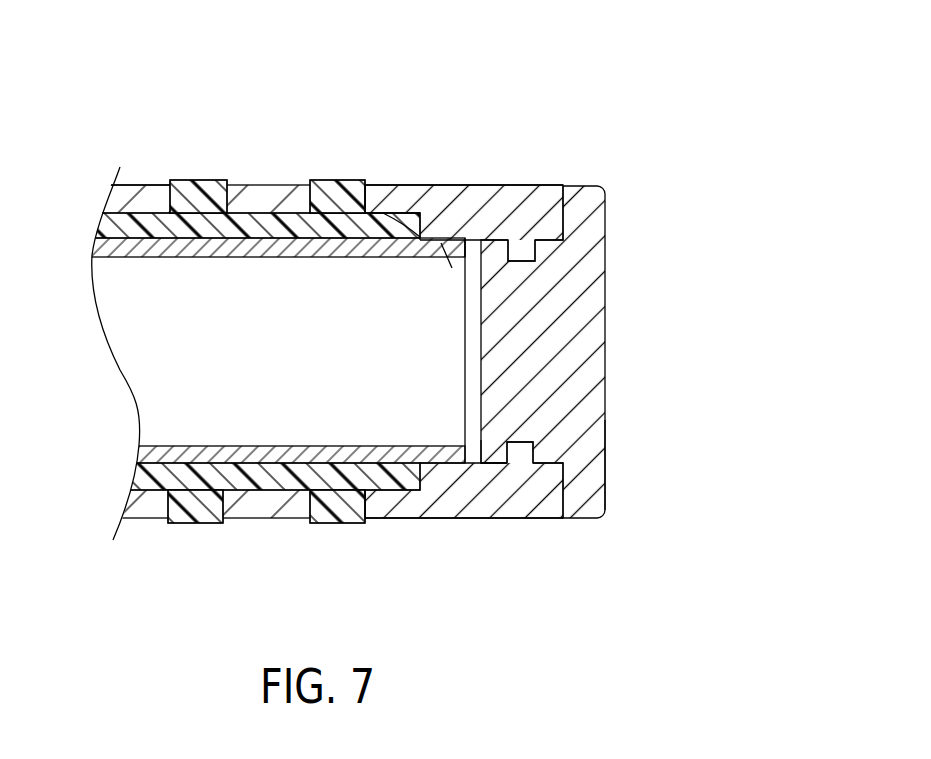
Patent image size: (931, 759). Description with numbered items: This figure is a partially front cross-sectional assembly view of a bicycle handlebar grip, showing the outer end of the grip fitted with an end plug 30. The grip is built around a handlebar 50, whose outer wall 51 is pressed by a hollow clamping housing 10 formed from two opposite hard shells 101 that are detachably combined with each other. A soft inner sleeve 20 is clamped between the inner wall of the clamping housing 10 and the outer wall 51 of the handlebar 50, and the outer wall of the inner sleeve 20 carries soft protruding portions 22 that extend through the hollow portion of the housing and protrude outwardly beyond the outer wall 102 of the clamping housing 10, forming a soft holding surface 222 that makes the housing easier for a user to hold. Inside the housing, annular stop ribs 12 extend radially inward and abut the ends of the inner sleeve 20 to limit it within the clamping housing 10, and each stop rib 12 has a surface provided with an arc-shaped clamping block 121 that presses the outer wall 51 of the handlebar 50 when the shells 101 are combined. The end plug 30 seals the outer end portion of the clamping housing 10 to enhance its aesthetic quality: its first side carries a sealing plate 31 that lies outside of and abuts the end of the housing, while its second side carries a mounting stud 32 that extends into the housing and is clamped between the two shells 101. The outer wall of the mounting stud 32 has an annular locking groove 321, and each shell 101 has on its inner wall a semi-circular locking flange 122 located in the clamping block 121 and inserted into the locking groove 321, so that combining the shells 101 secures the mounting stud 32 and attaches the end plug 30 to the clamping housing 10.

The clamping housing 10 is at (425, 172).
The hard shells 101 is at (497, 187).
The outer wall of the clamping housing 102 is at (132, 193).
The stop ribs 12 is at (383, 213).
The clamping block 121 is at (452, 268).
The locking flange 122 is at (527, 262).
The inner sleeve 20 is at (188, 532).
The soft protruding portion 22 is at (148, 185).
The soft holding surface 222 is at (337, 185).
The end plug 30 is at (615, 290).
The sealing plate 31 is at (582, 497).
The mounting stud 32 is at (493, 483).
The locking groove 321 is at (520, 447).
The handlebar 50 is at (268, 466).
The outer wall of the handlebar 51 is at (345, 472).